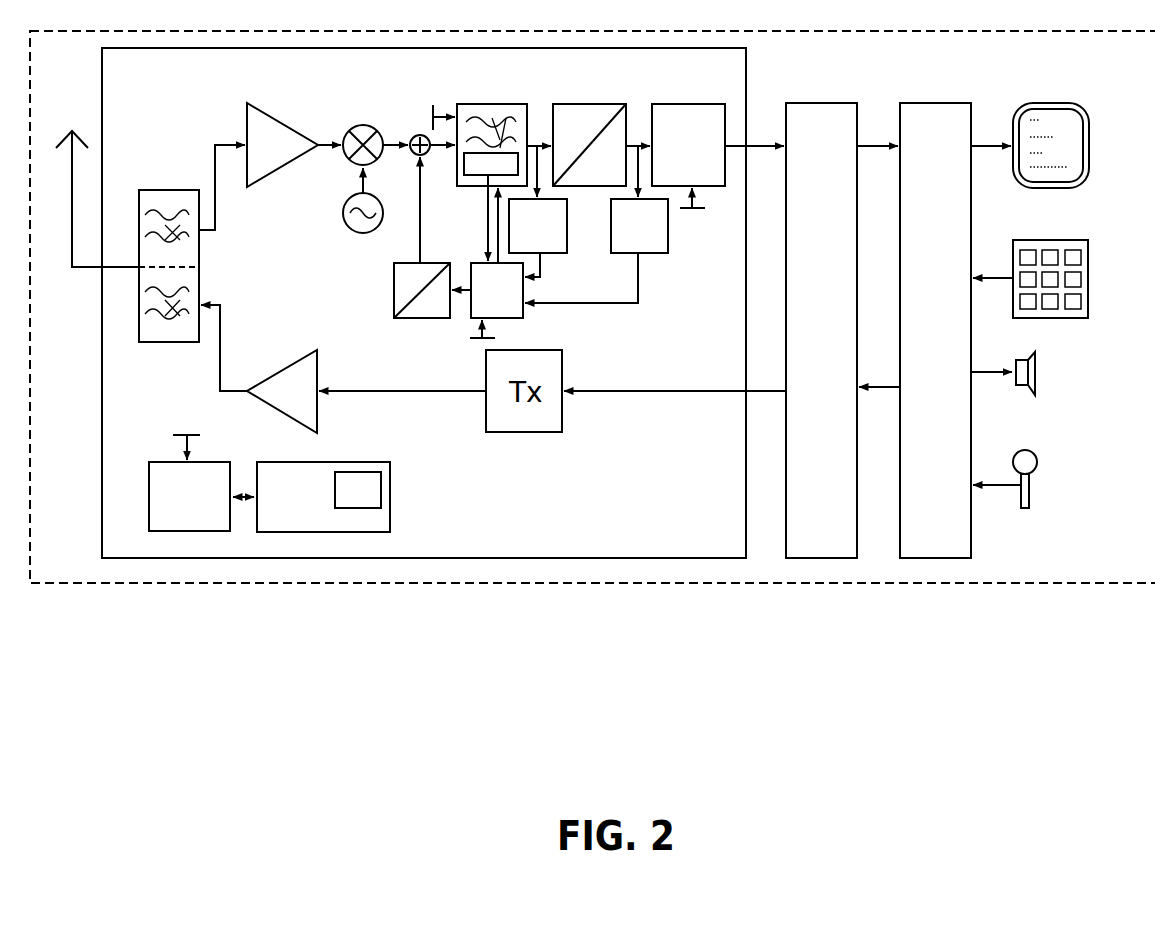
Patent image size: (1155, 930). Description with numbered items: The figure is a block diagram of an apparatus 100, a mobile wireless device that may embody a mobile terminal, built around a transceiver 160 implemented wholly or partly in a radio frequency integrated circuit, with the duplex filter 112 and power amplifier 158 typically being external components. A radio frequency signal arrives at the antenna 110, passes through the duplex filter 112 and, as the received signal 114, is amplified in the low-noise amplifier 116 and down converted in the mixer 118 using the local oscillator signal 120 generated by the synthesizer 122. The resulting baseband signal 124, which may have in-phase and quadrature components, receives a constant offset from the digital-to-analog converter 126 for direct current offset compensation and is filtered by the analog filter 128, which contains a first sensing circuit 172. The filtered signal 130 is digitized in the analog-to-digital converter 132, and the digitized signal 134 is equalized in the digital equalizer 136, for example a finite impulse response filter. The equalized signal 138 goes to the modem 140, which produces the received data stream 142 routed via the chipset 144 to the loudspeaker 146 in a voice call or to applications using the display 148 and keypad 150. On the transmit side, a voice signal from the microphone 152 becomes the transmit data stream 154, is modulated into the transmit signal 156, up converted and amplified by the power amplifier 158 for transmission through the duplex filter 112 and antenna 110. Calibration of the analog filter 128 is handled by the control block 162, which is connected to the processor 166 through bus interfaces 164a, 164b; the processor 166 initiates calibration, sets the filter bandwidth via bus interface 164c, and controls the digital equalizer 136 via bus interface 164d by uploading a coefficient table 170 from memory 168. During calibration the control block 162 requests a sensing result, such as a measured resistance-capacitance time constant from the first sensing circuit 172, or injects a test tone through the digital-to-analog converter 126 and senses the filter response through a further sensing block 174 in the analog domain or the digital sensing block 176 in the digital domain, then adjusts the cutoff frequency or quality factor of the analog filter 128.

The apparatus 100 is at (975, 31).
The antenna 110 is at (72, 132).
The duplex filter 112 is at (180, 190).
The receive path input 114 is at (222, 145).
The low-noise amplifier 116 is at (262, 178).
The mixer 118 is at (350, 132).
The local oscillator signal 120 is at (367, 182).
The synthesizer 122 is at (344, 222).
The baseband signal 124 is at (394, 143).
The digital-to-analog converter 126 is at (394, 295).
The analog filter 128 is at (464, 146).
The filtered signal 130 is at (537, 140).
The analog-to-digital converter 132 is at (562, 104).
The digital signal 134 is at (638, 140).
The digital equalizer 136 is at (722, 186).
The equalized signal 138 is at (756, 145).
The modem 140 is at (858, 243).
The received data stream 142 is at (875, 144).
The chipset 144 is at (945, 103).
The loudspeaker 146 is at (1037, 379).
The display 148 is at (1058, 103).
The keypad 150 is at (1070, 240).
The microphone 152 is at (1030, 487).
The transmit data stream 154 is at (868, 390).
The transmit signal 156 is at (768, 390).
The power amplifier 158 is at (262, 400).
The transceiver 160 is at (746, 86).
The control block 162 is at (475, 263).
The bus interface 164a is at (470, 345).
The bus interface 164b is at (195, 435).
The bus interface 164c is at (433, 124).
The bus interface 164d is at (700, 210).
The processor 166 is at (172, 462).
The memory 168 is at (356, 497).
The coefficient table 170 is at (383, 490).
The first sensing circuit 172 is at (468, 176).
The sensor 174 is at (553, 254).
The digital sensing block 176 is at (651, 254).